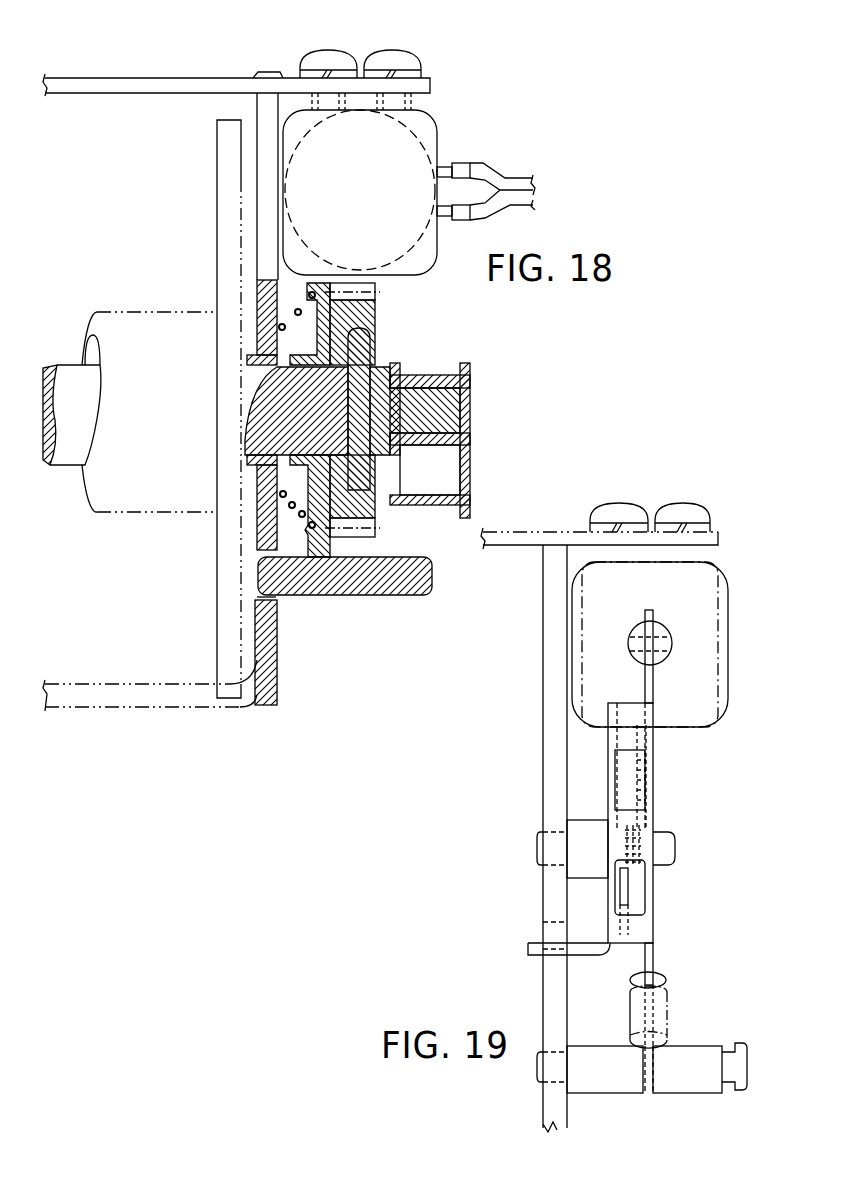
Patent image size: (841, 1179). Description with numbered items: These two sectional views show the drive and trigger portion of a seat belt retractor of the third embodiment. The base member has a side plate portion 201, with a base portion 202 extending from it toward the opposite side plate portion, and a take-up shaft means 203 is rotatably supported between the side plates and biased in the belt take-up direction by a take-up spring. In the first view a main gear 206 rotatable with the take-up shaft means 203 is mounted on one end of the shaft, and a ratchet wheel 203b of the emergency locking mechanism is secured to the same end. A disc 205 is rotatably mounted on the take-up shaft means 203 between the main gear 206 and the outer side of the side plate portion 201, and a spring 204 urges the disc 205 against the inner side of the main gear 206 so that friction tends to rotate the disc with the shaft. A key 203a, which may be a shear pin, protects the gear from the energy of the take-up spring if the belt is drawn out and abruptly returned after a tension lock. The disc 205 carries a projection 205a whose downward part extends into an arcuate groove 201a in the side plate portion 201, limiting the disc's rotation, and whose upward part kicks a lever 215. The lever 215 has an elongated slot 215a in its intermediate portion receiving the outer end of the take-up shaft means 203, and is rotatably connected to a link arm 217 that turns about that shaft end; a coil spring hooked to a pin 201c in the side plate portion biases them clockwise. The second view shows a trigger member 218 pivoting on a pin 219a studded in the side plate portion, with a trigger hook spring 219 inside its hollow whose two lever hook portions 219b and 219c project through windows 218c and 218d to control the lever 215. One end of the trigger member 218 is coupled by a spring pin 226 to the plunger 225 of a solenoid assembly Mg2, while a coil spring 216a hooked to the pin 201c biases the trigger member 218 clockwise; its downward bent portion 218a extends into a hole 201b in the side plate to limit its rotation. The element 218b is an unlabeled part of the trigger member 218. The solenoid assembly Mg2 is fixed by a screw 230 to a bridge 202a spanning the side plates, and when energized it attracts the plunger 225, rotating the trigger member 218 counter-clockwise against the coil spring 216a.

In FIG. 18, the bridge 202a is at (143, 78).
In FIG. 19, the bridge 202a is at (497, 547).
In FIG. 18, the screw 230 is at (333, 52).
In FIG. 19, the screw 230 is at (633, 504).
In FIG. 18, the solenoid assembly Mg2 is at (420, 153).
In FIG. 19, the solenoid assembly Mg2 is at (700, 562).
In FIG. 18, the ratchet wheel 203b is at (218, 194).
In FIG. 18, the side plate portion 201 is at (268, 706).
In FIG. 19, the side plate portion 201 is at (541, 733).
In FIG. 18, the base portion 202 is at (141, 708).
In FIG. 18, the take-up shaft means 203 is at (62, 467).
In FIG. 18, the spring 204 is at (292, 505).
In FIG. 18, the disc 205 is at (323, 320).
In FIG. 18, the main gear 206 is at (378, 292).
In FIG. 18, the key 203a is at (372, 351).
In FIG. 18, the link arm 217 is at (462, 441).
In FIG. 18, the elongated slot 215a is at (461, 474).
In FIG. 18, the lever 215 is at (437, 506).
In FIG. 18, the projection 205a is at (404, 596).
In FIG. 18, the arcuate groove 201a is at (273, 596).
In FIG. 19, the lever rod 218b is at (655, 618).
In FIG. 19, the plunger 225 is at (633, 636).
In FIG. 19, the spring pin 226 is at (670, 651).
In FIG. 19, the trigger member 218 is at (654, 815).
In FIG. 19, the window 218d is at (628, 786).
In FIG. 19, the lever hook portion 219c is at (645, 766).
In FIG. 19, the pin 219a is at (572, 867).
In FIG. 19, the trigger hook spring 219 is at (636, 870).
In FIG. 19, the window 218c is at (638, 891).
In FIG. 19, the lever hook portion 219b is at (628, 904).
In FIG. 19, the hole 201b is at (551, 962).
In FIG. 19, the downward bent portion 218a is at (584, 950).
In FIG. 19, the coil spring 216a is at (667, 1027).
In FIG. 19, the pin 201c is at (688, 1092).